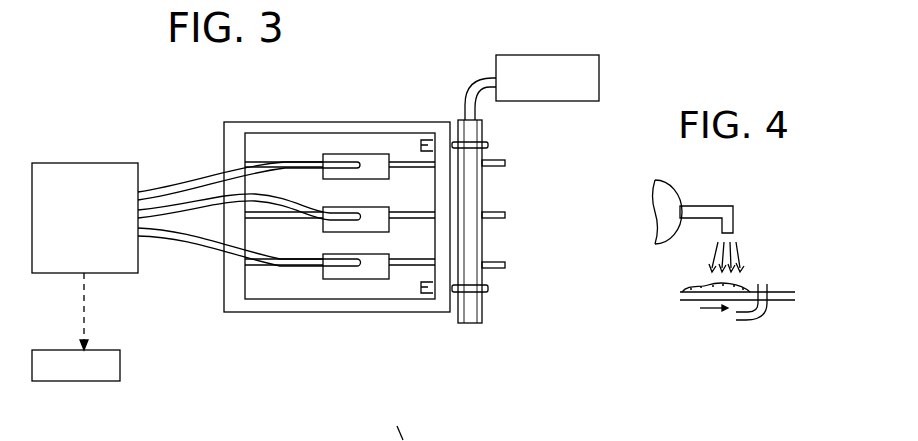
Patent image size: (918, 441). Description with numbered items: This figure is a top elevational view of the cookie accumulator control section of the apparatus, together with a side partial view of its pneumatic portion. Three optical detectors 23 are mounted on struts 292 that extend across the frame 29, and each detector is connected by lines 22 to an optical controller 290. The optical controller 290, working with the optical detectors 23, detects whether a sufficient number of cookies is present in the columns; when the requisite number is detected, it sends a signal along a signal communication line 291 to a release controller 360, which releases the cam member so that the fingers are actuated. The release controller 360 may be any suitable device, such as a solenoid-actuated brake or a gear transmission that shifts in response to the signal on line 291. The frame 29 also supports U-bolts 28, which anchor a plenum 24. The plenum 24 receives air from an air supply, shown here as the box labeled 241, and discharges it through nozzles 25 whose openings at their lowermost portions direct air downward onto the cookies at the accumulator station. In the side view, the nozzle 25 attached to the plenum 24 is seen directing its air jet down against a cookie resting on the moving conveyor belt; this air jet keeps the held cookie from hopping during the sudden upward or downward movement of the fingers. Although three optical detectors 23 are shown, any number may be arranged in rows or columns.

In FIG. 3, the lines 22 is at (188, 203).
In FIG. 3, the optical detector 23 is at (368, 153).
In FIG. 3, the plenum 24 is at (484, 195).
In FIG. 4, the plenum 24 is at (672, 188).
In FIG. 3, the nozzle 25 is at (508, 163).
In FIG. 4, the nozzle 25 is at (715, 206).
In FIG. 3, the U-bolt 28 is at (490, 146).
In FIG. 3, the frame 29 is at (224, 298).
In FIG. 3, the supply unit 241 is at (588, 66).
In FIG. 3, the optical controller 290 is at (82, 190).
In FIG. 3, the signal communication line 291 is at (86, 323).
In FIG. 3, the strut 292 is at (258, 162).
In FIG. 3, the release controller 360 is at (120, 368).